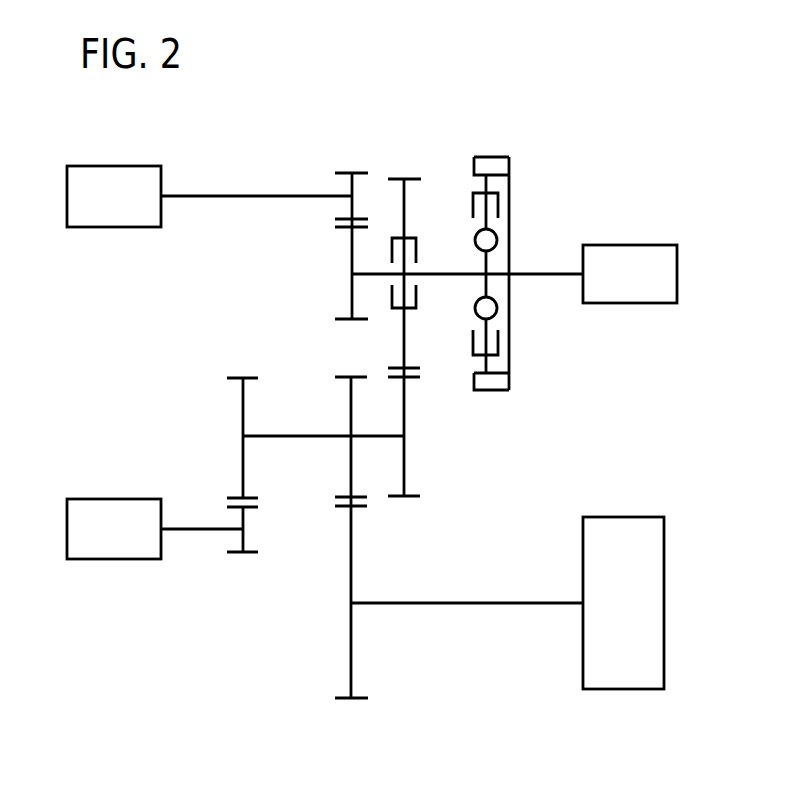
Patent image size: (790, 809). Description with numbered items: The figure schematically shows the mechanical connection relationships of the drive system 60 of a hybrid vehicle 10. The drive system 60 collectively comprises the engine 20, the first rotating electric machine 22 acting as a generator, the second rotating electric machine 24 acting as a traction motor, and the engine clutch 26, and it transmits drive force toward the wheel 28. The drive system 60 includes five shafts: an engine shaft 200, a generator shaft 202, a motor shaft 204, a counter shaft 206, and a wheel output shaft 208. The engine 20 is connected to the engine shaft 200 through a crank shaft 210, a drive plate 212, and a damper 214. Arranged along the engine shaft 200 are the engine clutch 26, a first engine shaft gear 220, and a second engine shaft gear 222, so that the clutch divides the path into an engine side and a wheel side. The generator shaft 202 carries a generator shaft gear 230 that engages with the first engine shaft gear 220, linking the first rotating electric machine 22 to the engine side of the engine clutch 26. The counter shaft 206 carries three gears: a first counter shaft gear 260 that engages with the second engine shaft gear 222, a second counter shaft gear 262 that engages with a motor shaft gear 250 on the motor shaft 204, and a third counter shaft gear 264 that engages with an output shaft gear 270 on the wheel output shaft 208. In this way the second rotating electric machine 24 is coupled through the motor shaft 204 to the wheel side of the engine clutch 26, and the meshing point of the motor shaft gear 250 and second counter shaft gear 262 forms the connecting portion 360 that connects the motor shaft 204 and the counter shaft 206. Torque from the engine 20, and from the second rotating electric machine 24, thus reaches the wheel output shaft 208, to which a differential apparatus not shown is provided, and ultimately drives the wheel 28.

The vehicle 10 is at (256, 82).
The drive system 60 is at (577, 84).
The engine 20 is at (630, 252).
The first rotating electric machine 22 is at (114, 175).
The second rotating electric machine 24 is at (114, 507).
The engine clutch 26 is at (422, 250).
The wheel 28 is at (623, 579).
The engine shaft 200 is at (426, 250).
The generator shaft 202 is at (256, 172).
The motor shaft 204 is at (202, 505).
The counter shaft 206 is at (323, 411).
The wheel output shaft 208 is at (467, 578).
The crank shaft 210 is at (541, 251).
The drive plate 212 is at (523, 273).
The damper 214 is at (469, 244).
The first engine shaft gear 220 is at (330, 273).
The second engine shaft gear 222 is at (401, 314).
The generator shaft gear 230 is at (343, 176).
The motor shaft gear 250 is at (237, 550).
The first counter shaft gear 260 is at (414, 458).
The second counter shaft gear 262 is at (230, 414).
The third counter shaft gear 264 is at (329, 419).
The output shaft gear 270 is at (346, 625).
The connecting portion 360 is at (260, 481).